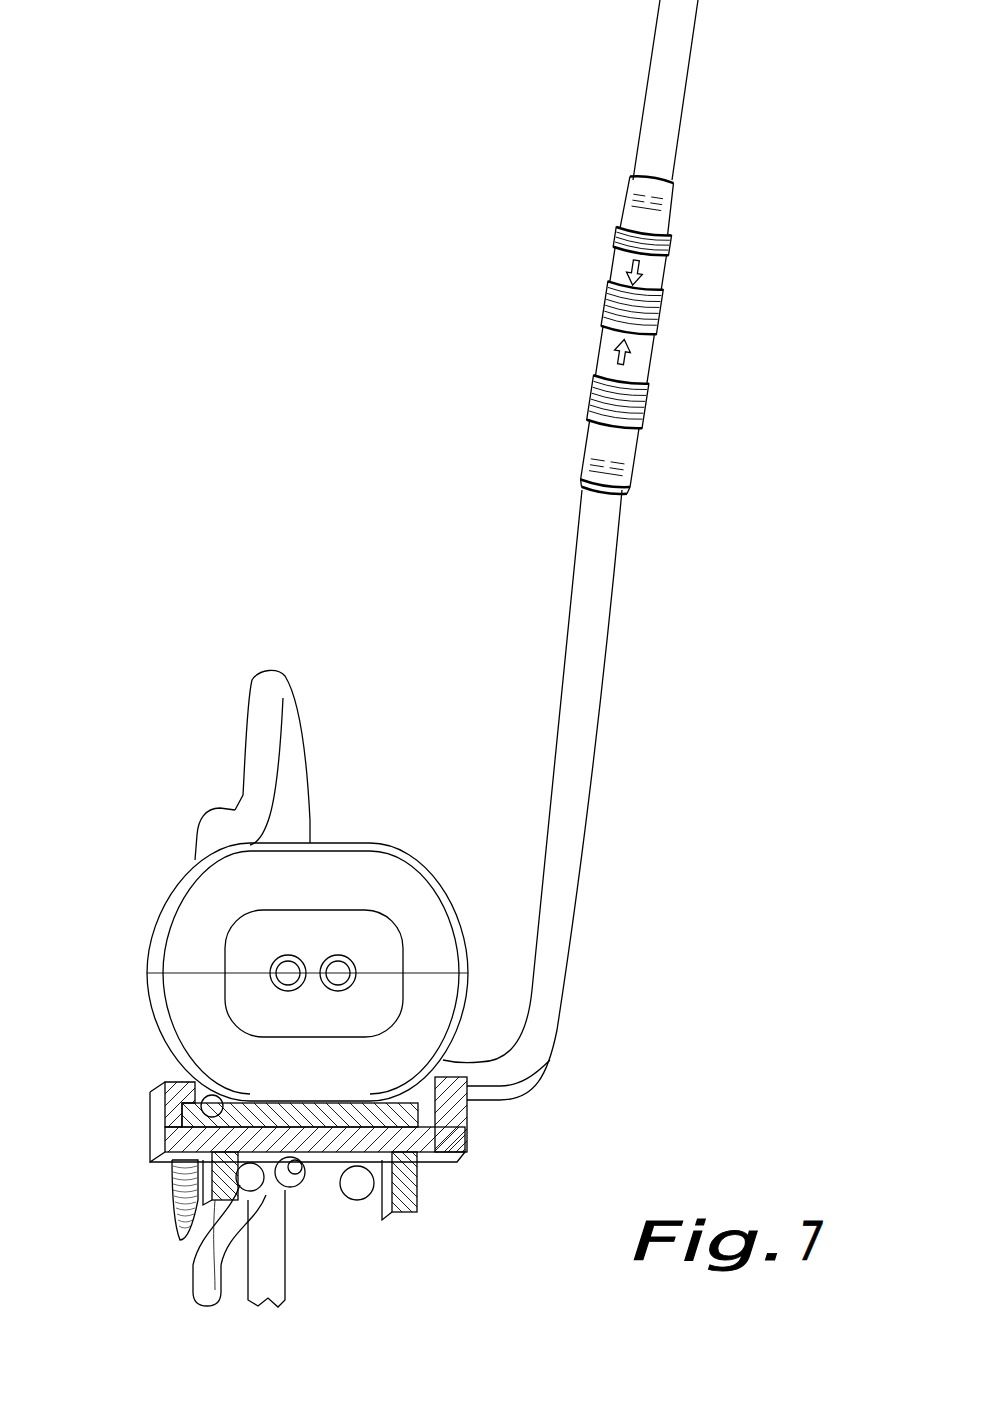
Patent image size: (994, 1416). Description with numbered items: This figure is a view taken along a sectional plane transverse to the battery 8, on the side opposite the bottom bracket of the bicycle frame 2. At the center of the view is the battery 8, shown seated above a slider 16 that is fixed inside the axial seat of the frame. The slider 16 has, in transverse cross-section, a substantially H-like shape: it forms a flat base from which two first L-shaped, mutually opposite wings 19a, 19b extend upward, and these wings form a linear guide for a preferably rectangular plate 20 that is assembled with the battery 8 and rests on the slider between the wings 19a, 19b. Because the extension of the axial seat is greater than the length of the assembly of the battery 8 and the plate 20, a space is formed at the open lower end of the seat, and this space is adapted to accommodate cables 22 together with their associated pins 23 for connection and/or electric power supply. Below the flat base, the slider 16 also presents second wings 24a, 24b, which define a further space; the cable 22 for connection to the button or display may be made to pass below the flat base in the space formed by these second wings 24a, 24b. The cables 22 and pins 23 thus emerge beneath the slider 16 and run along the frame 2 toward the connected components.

The frame 2 is at (657, 135).
The pins 23 is at (660, 287).
The cables 22 is at (585, 727).
The battery 8 is at (403, 841).
The first L-shaped wing 19a is at (550, 1060).
The first L-shaped wing 19b is at (173, 1088).
The plate 20 is at (369, 1104).
The slider 16 is at (472, 1128).
The second wing 24b is at (203, 1200).
The second wing 24a is at (420, 1180).